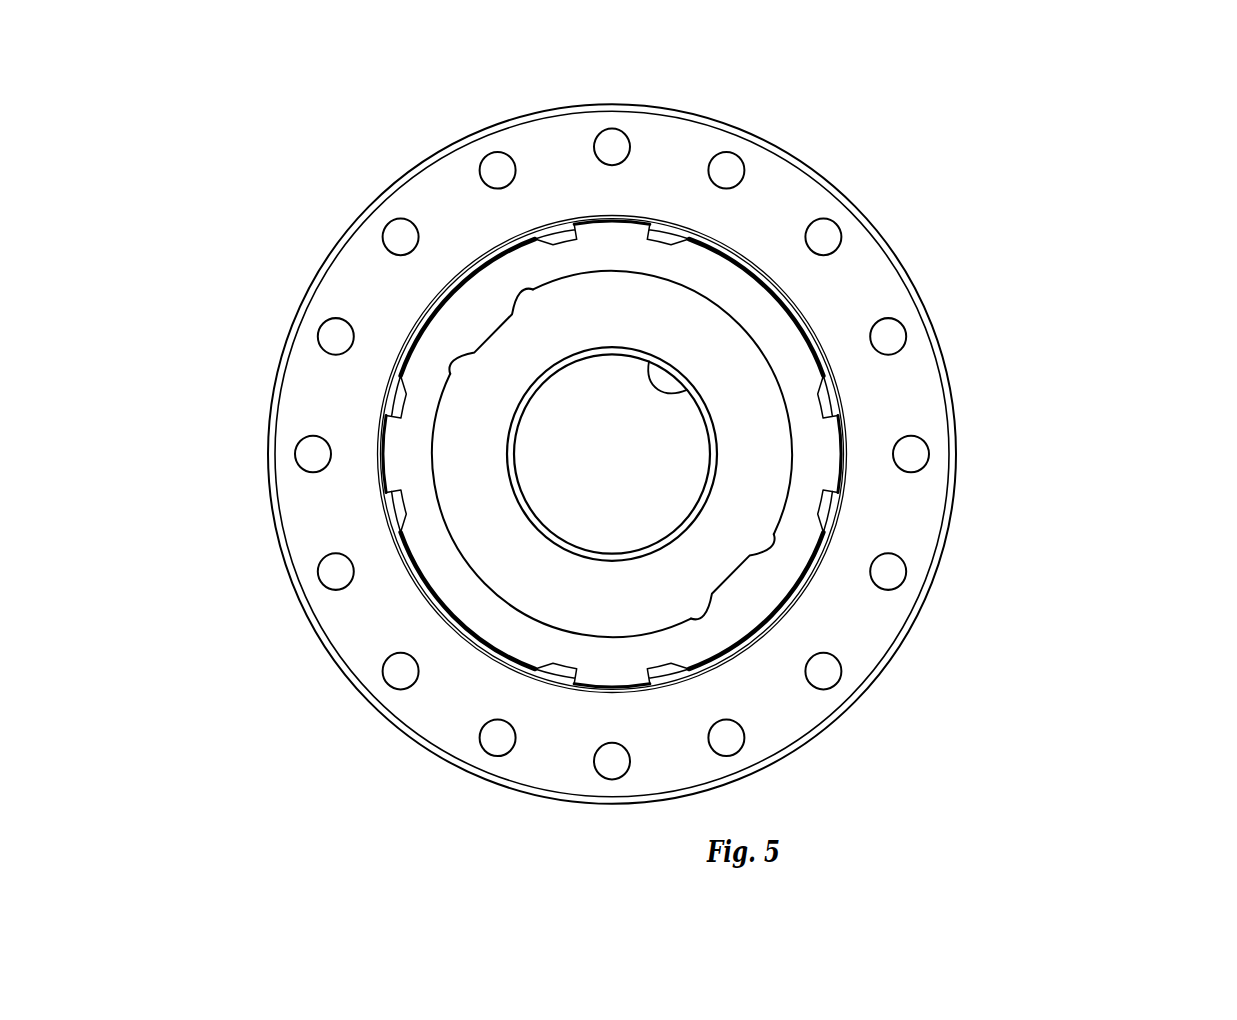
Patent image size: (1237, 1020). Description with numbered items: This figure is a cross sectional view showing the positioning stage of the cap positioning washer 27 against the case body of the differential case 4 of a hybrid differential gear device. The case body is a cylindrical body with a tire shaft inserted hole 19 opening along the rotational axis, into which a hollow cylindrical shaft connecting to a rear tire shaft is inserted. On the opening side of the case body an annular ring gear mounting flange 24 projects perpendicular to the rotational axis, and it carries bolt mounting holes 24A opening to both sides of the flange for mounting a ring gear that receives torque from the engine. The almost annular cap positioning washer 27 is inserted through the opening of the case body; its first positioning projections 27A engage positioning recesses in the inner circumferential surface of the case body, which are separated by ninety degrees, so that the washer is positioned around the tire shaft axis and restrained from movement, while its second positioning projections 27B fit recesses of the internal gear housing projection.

The differential case 4 is at (975, 496).
The tire shaft inserted hole 19 is at (672, 397).
The ring gear mounting flange 24 is at (785, 707).
The bolt mounting hole 24A is at (876, 326).
The cap positioning washer 27 is at (698, 442).
The first positioning projection 27A is at (593, 230).
The second positioning projection 27B is at (493, 320).